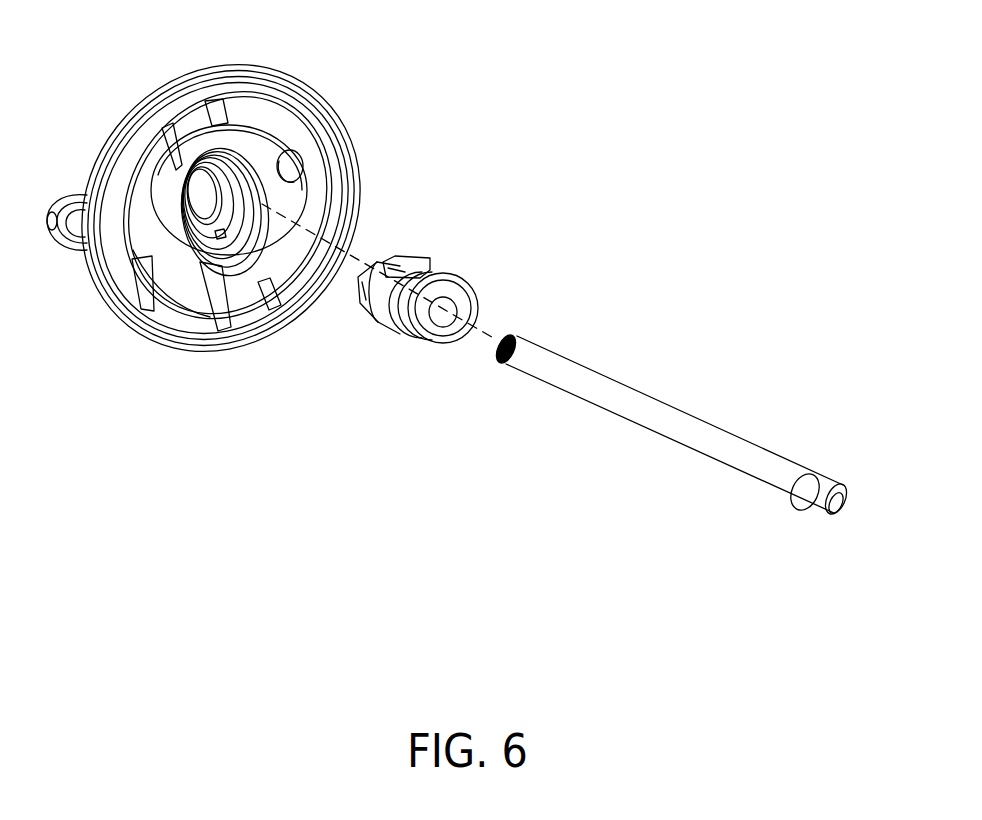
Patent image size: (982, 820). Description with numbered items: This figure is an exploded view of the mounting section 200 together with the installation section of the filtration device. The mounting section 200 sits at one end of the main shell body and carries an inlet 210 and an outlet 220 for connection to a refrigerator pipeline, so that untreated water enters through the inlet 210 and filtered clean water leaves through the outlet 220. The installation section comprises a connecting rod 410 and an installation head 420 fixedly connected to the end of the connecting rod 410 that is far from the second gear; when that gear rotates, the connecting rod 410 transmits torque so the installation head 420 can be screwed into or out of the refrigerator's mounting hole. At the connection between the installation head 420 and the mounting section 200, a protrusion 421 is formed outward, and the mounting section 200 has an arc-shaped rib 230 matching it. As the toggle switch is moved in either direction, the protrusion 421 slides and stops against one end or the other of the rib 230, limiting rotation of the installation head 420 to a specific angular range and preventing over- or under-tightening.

The mounting section 200 is at (222, 92).
The inlet 210 is at (135, 322).
The outlet 220 is at (302, 160).
The arc-shaped rib 230 is at (226, 230).
The connecting rod 410 is at (585, 375).
The installation head 420 is at (460, 302).
The protrusion 421 is at (422, 262).